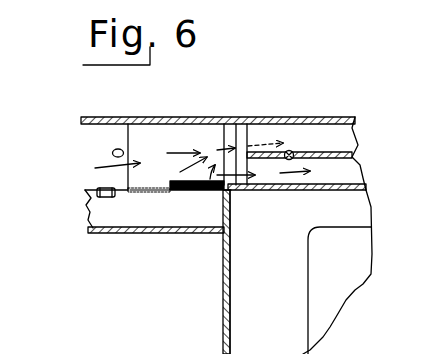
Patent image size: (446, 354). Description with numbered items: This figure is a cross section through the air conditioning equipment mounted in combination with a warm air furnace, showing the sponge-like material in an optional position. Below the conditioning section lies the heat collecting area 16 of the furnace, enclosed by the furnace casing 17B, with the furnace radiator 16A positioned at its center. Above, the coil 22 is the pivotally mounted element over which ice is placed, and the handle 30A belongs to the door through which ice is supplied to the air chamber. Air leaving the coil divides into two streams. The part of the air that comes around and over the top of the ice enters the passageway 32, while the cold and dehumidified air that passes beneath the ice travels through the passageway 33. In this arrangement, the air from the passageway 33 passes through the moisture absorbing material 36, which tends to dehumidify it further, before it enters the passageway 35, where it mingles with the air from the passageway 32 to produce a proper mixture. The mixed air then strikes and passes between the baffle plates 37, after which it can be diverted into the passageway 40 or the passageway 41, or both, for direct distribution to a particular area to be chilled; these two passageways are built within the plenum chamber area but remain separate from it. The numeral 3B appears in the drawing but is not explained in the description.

The passageway 32 is at (147, 134).
The handle 30A is at (111, 151).
The coil 22 is at (100, 188).
The passageway 33 is at (180, 197).
The screen 3B is at (137, 195).
The baffle plates 37 is at (242, 140).
The passageway 35 is at (216, 144).
The passageway 40 is at (299, 146).
The passageway 41 is at (312, 173).
The heat collecting area 16 is at (300, 269).
The furnace radiator 16A is at (339, 290).
The furnace casing 17B is at (223, 329).
The moisture absorbing material 36 is at (216, 190).